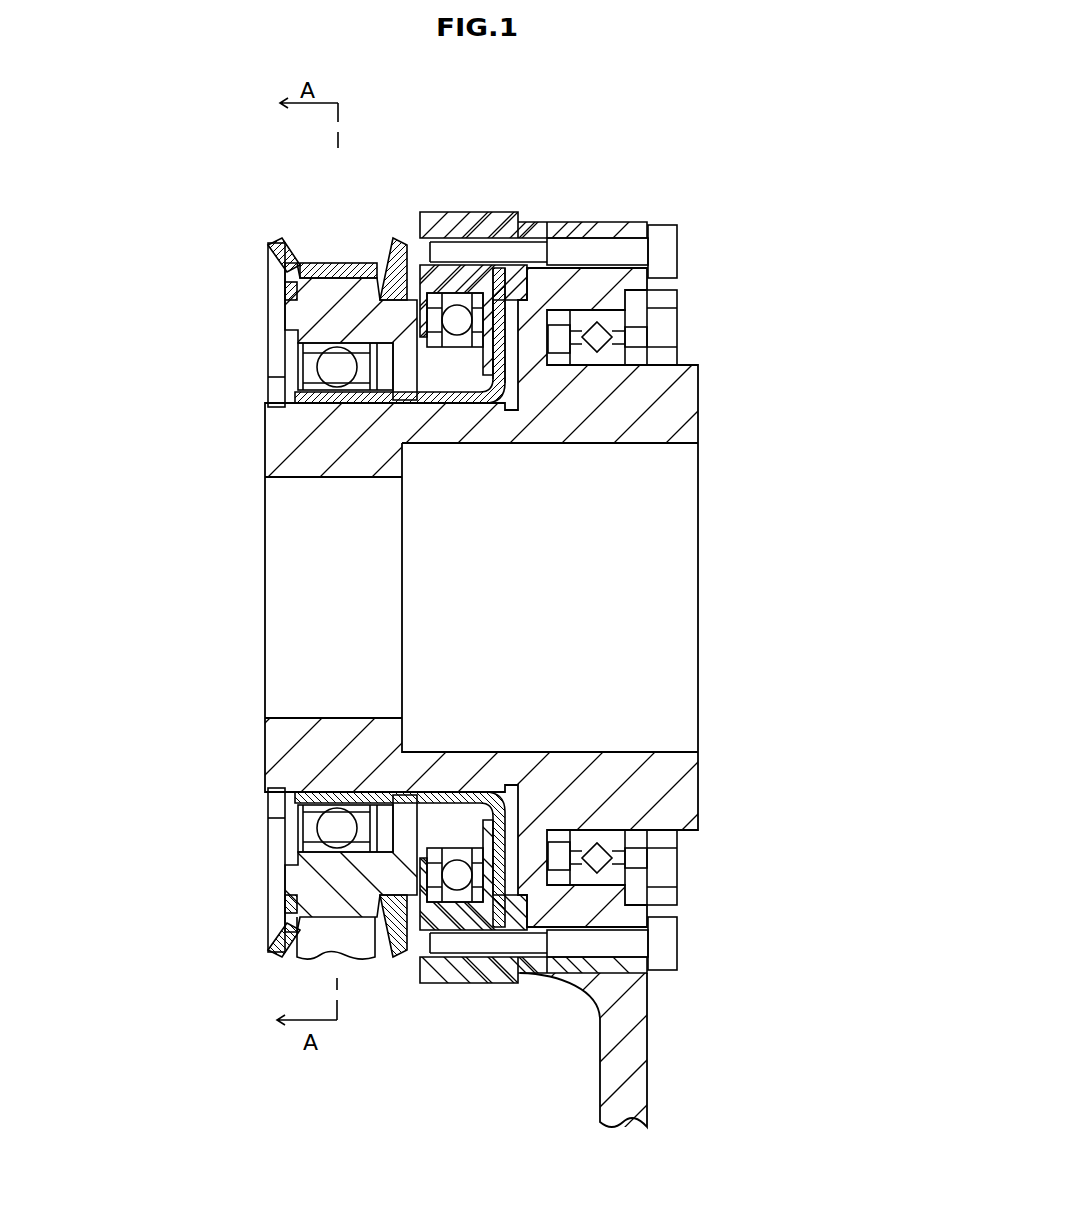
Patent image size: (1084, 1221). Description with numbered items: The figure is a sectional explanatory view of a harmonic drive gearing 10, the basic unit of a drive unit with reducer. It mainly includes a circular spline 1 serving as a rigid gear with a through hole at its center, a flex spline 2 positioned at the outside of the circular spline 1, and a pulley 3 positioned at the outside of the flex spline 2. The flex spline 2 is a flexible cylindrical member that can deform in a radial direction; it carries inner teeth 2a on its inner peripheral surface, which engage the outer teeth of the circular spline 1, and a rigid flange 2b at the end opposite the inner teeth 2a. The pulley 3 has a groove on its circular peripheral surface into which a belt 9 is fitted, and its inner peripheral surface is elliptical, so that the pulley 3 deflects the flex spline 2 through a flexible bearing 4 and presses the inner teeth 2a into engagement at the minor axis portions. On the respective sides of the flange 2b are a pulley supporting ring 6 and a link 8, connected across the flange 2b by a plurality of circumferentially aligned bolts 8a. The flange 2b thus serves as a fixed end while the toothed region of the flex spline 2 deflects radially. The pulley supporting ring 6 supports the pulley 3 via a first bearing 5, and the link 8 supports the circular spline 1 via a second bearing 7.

The circular spline 1 is at (672, 423).
The flex spline 2 is at (445, 397).
The inner teeth 2a is at (325, 405).
The flange 2b is at (478, 355).
The pulley 3 is at (307, 318).
The flexible bearing 4 is at (307, 367).
The first bearing 5 is at (440, 300).
The pulley supporting ring 6 is at (443, 222).
The second bearing 7 is at (647, 355).
The link 8 is at (665, 303).
The bolt 8a is at (670, 243).
The belt 9 is at (327, 263).
The harmonic drive gearing 10 is at (395, 1025).